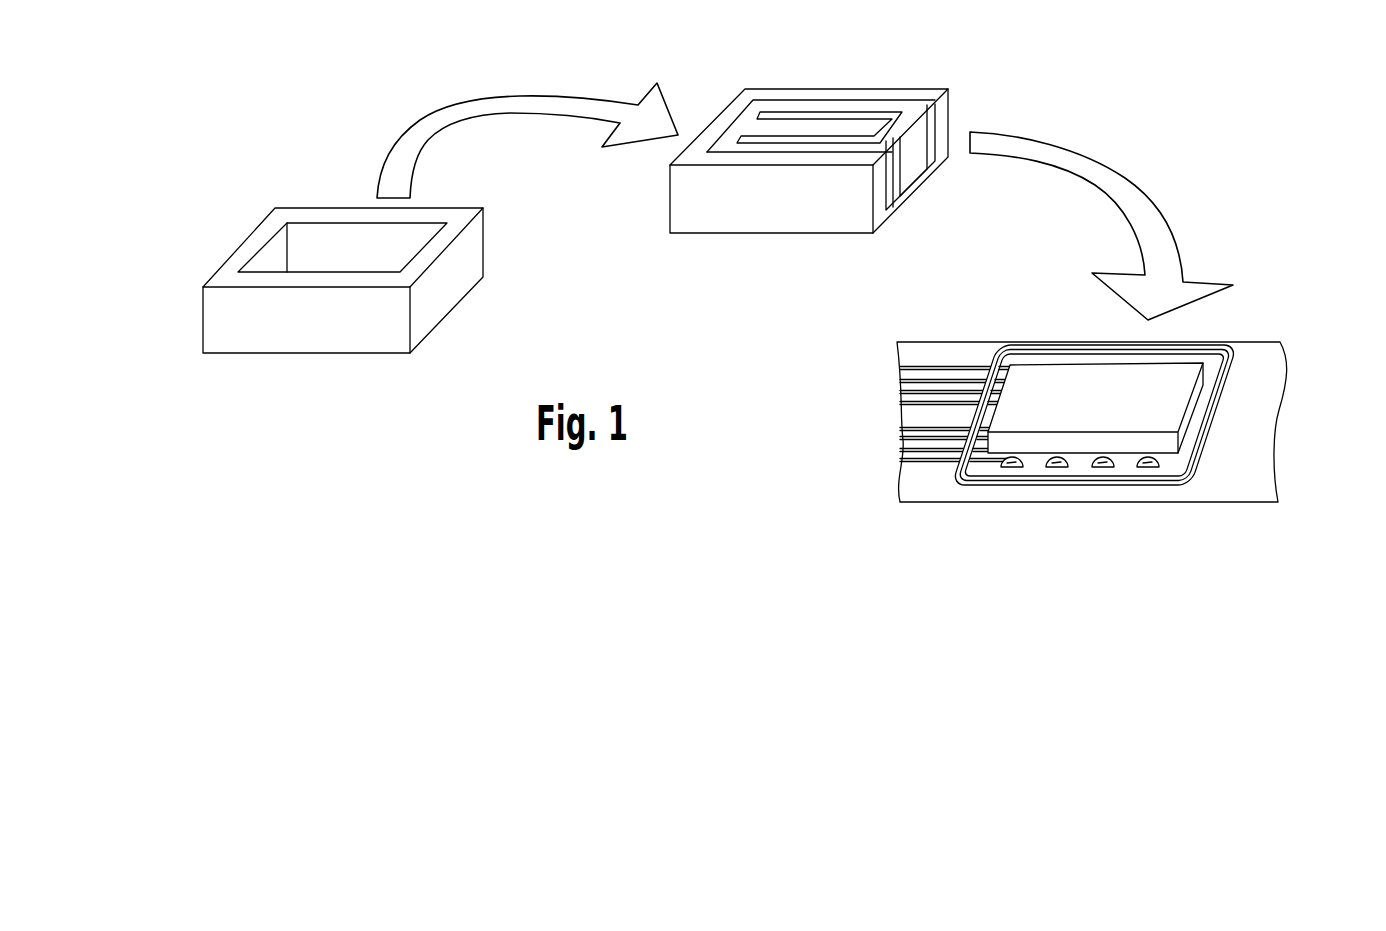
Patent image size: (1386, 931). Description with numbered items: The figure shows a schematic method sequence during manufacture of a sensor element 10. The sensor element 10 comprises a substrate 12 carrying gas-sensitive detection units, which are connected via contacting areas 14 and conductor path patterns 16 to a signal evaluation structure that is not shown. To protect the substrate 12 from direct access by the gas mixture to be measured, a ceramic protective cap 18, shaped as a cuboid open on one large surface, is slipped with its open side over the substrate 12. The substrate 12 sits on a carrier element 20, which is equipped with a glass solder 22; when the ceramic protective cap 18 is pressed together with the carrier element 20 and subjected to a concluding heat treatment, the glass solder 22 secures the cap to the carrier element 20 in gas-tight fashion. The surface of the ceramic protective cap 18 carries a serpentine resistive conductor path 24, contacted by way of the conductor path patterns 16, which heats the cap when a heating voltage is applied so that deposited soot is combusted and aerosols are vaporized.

The sensor element 10 is at (1080, 375).
The substrate 12 is at (1068, 378).
The contacting areas 14 is at (1012, 468).
The conductor path patterns 16 is at (905, 399).
The ceramic protective cap 18 is at (301, 330).
The carrier element 20 is at (1055, 421).
The glass solder 22 is at (1170, 487).
The serpentine resistive conductor path 24 is at (802, 112).